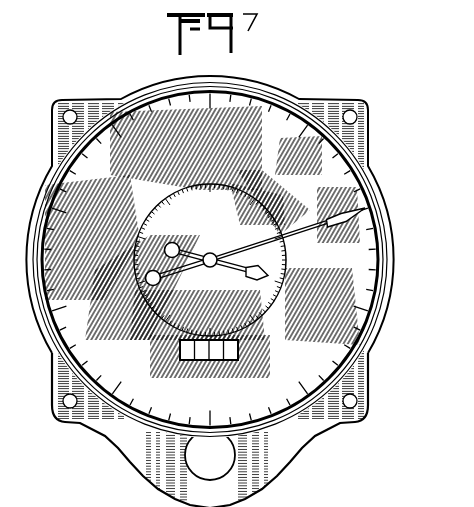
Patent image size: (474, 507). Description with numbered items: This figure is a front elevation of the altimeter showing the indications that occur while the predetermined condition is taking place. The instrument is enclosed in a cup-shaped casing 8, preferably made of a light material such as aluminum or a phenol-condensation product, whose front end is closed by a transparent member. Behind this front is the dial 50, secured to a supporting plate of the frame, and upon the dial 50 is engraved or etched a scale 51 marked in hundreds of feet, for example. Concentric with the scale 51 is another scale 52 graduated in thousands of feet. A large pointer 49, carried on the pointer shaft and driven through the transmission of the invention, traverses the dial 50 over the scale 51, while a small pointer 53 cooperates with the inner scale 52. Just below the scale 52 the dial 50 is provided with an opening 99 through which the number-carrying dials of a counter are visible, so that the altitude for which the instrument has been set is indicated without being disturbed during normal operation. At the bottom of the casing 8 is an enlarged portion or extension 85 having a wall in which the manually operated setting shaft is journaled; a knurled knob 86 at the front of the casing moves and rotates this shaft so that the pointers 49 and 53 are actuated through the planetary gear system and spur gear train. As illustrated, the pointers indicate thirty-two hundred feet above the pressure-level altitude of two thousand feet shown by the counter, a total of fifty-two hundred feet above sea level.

The casing 8 is at (392, 268).
The large pointer 49 is at (299, 224).
The dial 50 is at (359, 253).
The scale 51 is at (370, 349).
The scale 52 is at (270, 274).
The small pointer 53 is at (229, 269).
The enlarged portion or extension 85 is at (268, 486).
The knurled knob 86 is at (200, 463).
The opening 99 is at (239, 349).